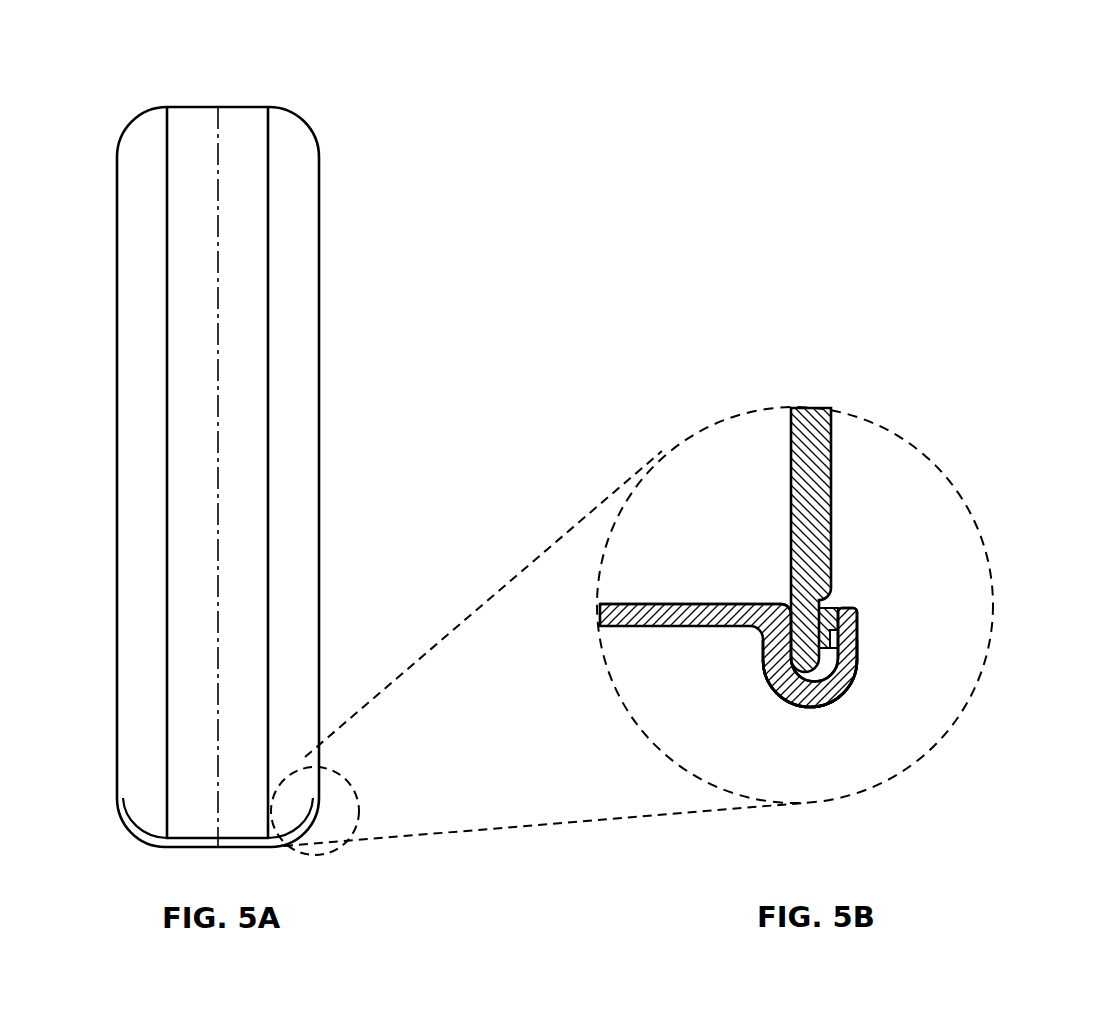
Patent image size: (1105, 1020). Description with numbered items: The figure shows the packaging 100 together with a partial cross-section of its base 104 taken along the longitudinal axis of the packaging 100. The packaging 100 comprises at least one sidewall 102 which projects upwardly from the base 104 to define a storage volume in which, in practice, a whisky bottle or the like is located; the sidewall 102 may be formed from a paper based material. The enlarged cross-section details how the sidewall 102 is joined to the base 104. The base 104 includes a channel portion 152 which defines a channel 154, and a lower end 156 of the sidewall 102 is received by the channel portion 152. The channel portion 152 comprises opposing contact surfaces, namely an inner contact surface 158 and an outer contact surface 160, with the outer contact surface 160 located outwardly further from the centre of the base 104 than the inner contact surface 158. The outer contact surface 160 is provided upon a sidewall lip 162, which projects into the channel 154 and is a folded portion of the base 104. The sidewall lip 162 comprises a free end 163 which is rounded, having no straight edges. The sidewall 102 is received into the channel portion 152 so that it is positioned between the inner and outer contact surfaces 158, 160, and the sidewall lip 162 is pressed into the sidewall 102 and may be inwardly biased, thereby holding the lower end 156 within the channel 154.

In FIG. 5A, the packaging 100 is at (370, 104).
In FIG. 5A, the sidewall 102 is at (305, 347).
In FIG. 5B, the sidewall 102 is at (832, 450).
In FIG. 5A, the base 104 is at (128, 816).
In FIG. 5B, the base 104 is at (672, 627).
In FIG. 5B, the channel portion 152 is at (760, 570).
In FIG. 5B, the channel 154 is at (797, 708).
In FIG. 5B, the lower end 156 is at (848, 682).
In FIG. 5B, the inner contact surface 158 is at (783, 607).
In FIG. 5B, the outer contact surface 160 is at (848, 608).
In FIG. 5B, the sidewall lip 162 is at (857, 612).
In FIG. 5B, the free end 163 is at (837, 650).